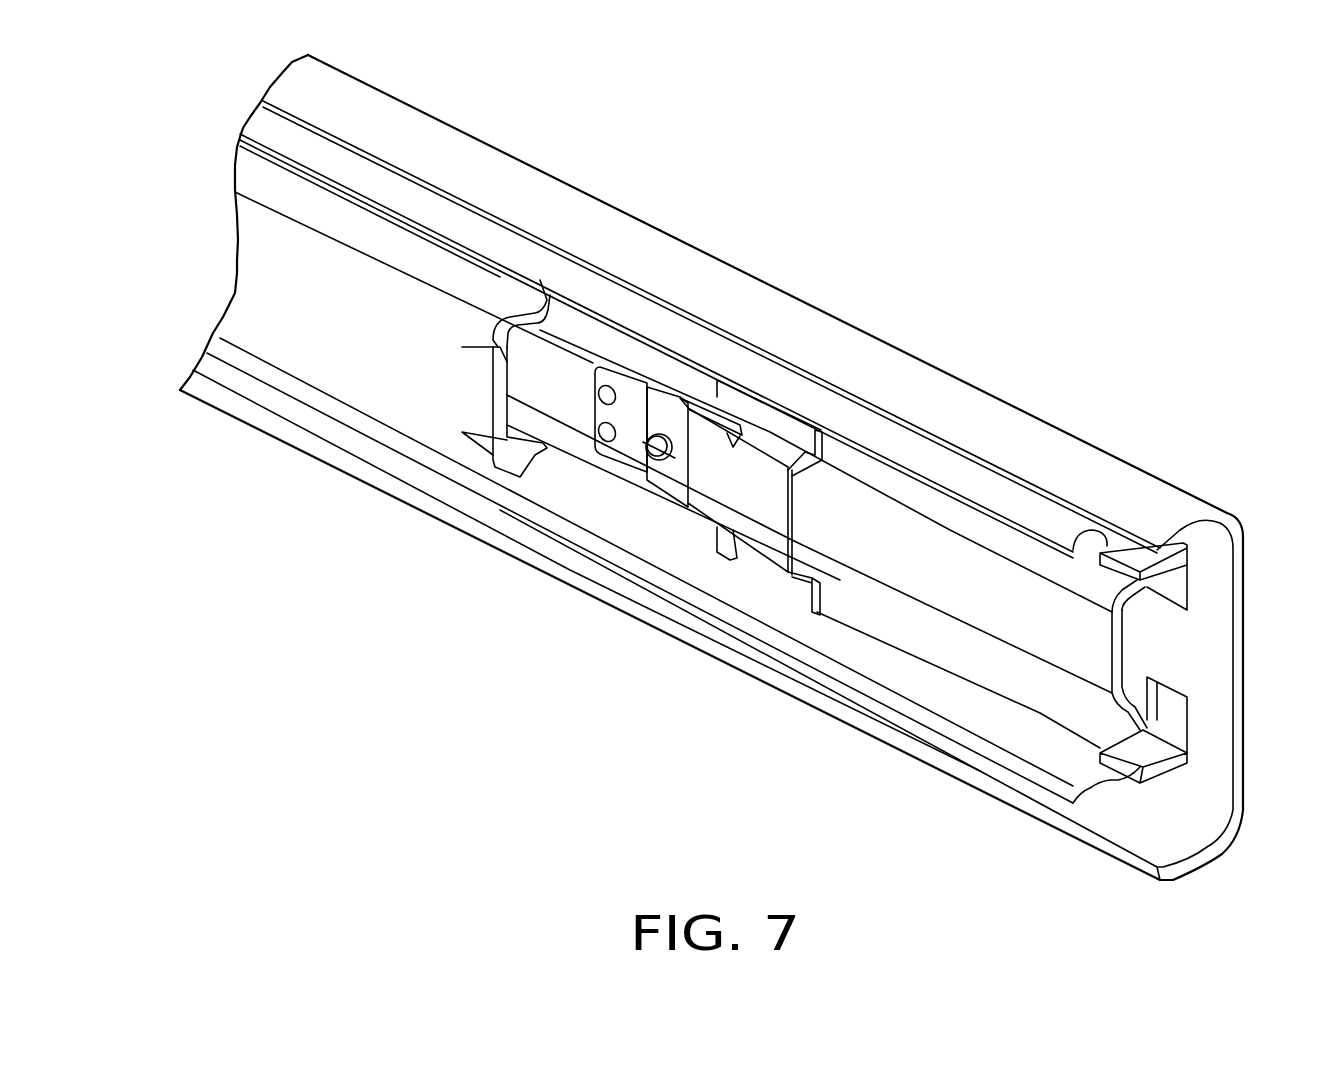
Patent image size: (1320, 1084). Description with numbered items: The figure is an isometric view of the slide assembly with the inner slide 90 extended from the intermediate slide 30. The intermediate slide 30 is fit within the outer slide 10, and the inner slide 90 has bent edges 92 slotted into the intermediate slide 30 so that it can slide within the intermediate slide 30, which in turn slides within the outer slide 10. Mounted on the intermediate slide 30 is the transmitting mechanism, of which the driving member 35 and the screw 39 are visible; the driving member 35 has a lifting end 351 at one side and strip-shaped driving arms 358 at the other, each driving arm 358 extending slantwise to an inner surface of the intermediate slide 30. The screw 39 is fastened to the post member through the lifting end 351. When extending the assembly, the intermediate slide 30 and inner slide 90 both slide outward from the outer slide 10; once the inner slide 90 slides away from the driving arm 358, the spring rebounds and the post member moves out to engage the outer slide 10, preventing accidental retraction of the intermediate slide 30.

The outer slide 10 is at (732, 307).
The intermediate slide 30 is at (928, 463).
The driving member 35 is at (640, 587).
The screw 39 is at (647, 445).
The inner slide 90 is at (273, 290).
The bent edges 92 is at (500, 290).
The lifting end 351 is at (667, 477).
The driving arms 358 is at (755, 560).